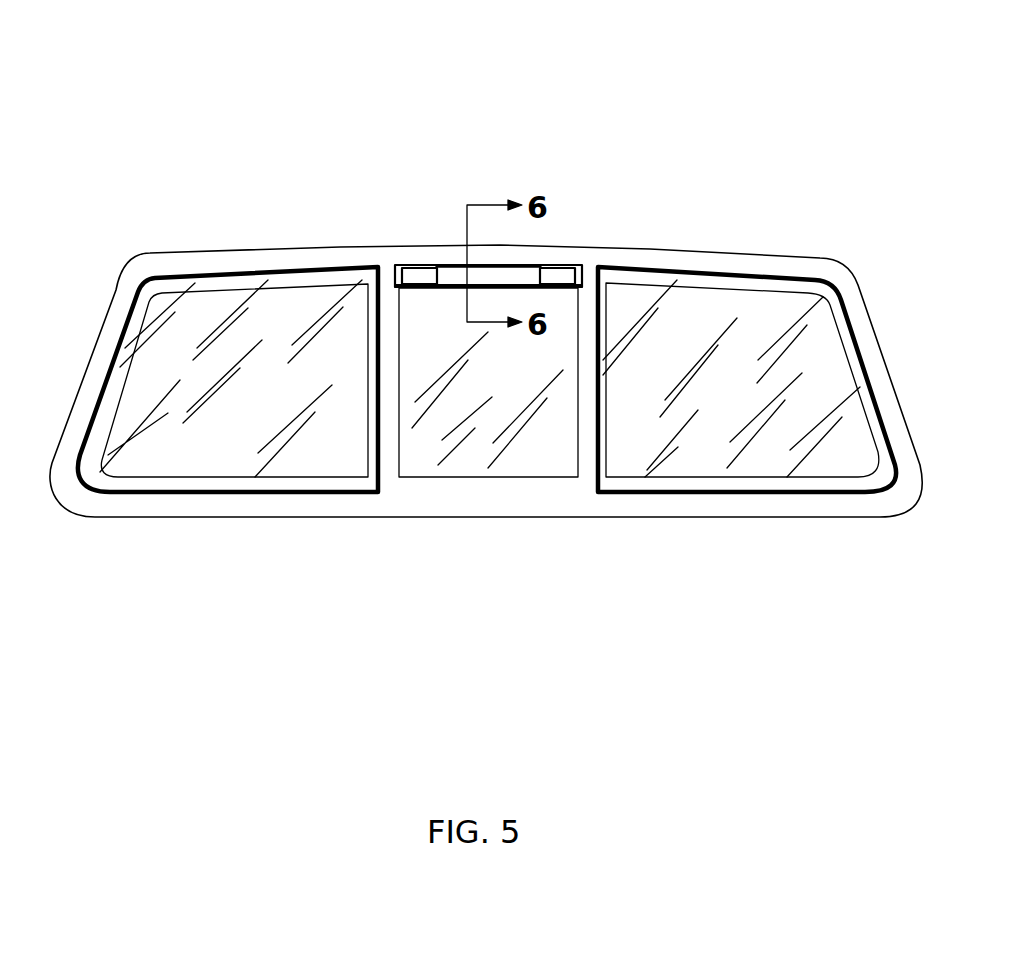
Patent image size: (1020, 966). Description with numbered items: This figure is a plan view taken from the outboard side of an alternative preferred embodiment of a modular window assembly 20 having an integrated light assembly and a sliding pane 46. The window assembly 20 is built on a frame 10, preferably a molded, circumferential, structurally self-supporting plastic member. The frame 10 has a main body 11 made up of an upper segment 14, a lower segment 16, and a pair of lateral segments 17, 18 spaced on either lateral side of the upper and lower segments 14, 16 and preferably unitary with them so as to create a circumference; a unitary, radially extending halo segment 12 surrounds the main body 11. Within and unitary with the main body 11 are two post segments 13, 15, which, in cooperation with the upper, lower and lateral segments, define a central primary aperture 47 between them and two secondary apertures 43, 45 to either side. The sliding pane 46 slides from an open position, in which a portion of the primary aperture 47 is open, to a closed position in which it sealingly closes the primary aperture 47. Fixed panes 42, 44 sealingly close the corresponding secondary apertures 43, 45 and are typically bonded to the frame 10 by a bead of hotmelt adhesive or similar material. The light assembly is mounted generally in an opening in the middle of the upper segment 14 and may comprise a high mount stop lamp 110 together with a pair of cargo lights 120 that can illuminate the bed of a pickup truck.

The frame 10 is at (838, 263).
The main body 11 is at (231, 382).
The halo segment 12 is at (757, 250).
The post segment 13 is at (388, 367).
The upper segment 14 is at (437, 243).
The post segment 15 is at (587, 437).
The lower segment 16 is at (450, 518).
The lateral segment 17 is at (105, 318).
The lateral segment 18 is at (883, 340).
The window assembly 20 is at (500, 323).
The fixed pane 42 is at (213, 281).
The secondary aperture 43 is at (234, 378).
The fixed pane 44 is at (650, 279).
The secondary aperture 45 is at (741, 378).
The sliding pane 46 is at (515, 468).
The primary aperture 47 is at (487, 400).
The high mount stop lamp 110 is at (537, 266).
The cargo lights 120 is at (410, 272).